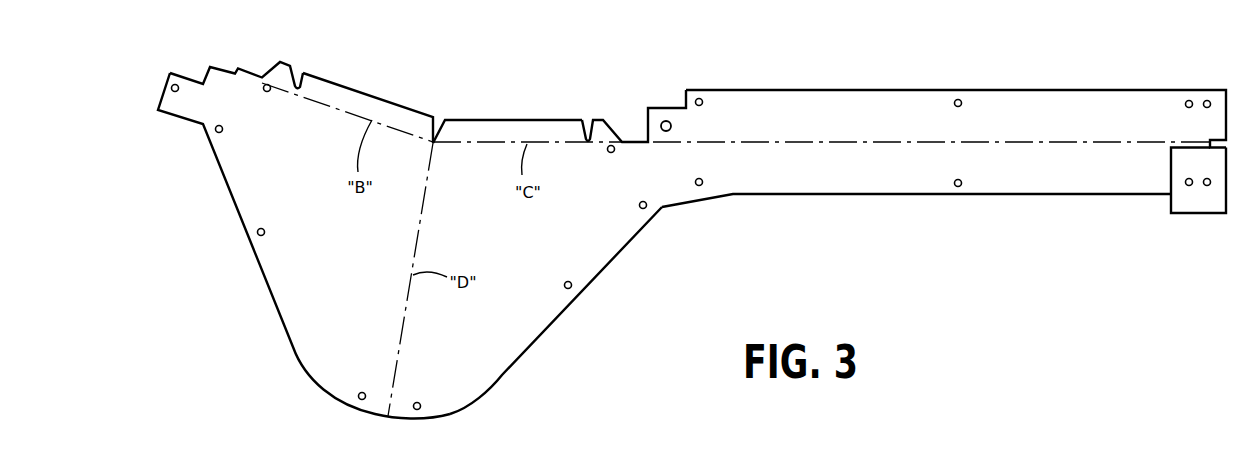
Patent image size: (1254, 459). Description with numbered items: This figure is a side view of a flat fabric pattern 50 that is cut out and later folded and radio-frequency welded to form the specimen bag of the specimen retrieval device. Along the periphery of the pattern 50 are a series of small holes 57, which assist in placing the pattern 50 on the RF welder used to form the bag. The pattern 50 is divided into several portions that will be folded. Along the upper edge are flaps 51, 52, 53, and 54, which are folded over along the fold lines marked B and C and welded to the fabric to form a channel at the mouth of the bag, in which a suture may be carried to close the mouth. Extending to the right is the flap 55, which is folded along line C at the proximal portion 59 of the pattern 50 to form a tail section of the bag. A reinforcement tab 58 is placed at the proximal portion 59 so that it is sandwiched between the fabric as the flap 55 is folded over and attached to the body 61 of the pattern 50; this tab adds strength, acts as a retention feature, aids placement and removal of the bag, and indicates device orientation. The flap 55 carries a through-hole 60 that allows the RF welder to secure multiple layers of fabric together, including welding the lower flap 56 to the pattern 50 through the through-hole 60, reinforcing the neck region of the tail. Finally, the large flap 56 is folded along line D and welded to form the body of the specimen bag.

The pattern 50 is at (836, 73).
The flap 51 is at (280, 62).
The flap 52 is at (335, 95).
The flap 53 is at (522, 130).
The flap 54 is at (603, 130).
The flap 55 is at (920, 107).
The flap 56 is at (298, 283).
The holes 57 is at (700, 98).
The reinforcement tab 58 is at (1204, 203).
The proximal portion 59 is at (1163, 110).
The through-hole 60 is at (662, 122).
The body 61 is at (512, 323).